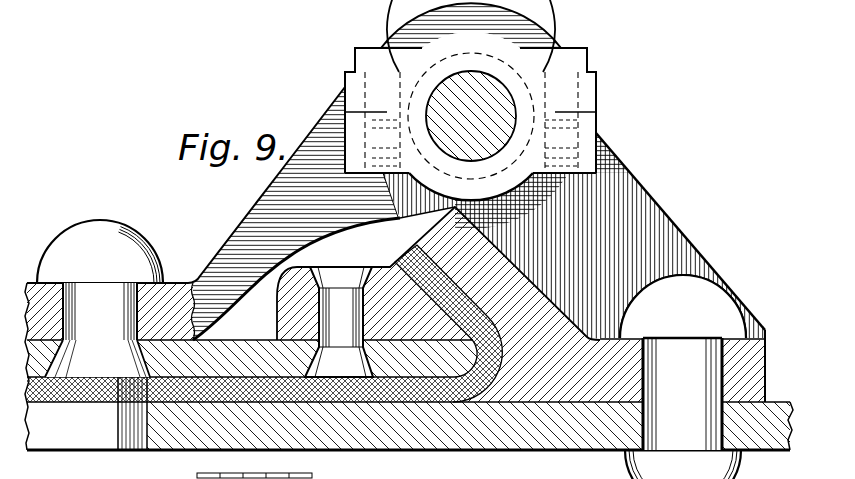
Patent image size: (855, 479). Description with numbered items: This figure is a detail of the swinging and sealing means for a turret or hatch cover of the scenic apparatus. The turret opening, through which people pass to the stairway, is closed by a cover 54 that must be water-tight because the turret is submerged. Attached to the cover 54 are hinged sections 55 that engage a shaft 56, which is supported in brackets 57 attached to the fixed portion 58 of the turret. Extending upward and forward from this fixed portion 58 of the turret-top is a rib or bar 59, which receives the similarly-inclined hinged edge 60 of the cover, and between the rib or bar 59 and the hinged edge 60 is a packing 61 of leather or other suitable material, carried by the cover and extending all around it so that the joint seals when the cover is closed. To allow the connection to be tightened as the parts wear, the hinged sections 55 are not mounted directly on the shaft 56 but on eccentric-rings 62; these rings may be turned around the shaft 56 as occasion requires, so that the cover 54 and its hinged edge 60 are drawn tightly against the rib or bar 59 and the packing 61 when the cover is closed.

The cover 54 is at (262, 341).
The hinged sections 55 is at (258, 217).
The shaft 56 is at (532, 68).
The brackets 57 is at (659, 208).
The fixed portion of the turret 58 is at (755, 338).
The rib or bar 59 is at (415, 246).
The hinged edge of the cover 60 is at (382, 267).
The packing 61 is at (430, 404).
The eccentric-rings 62 is at (483, 93).